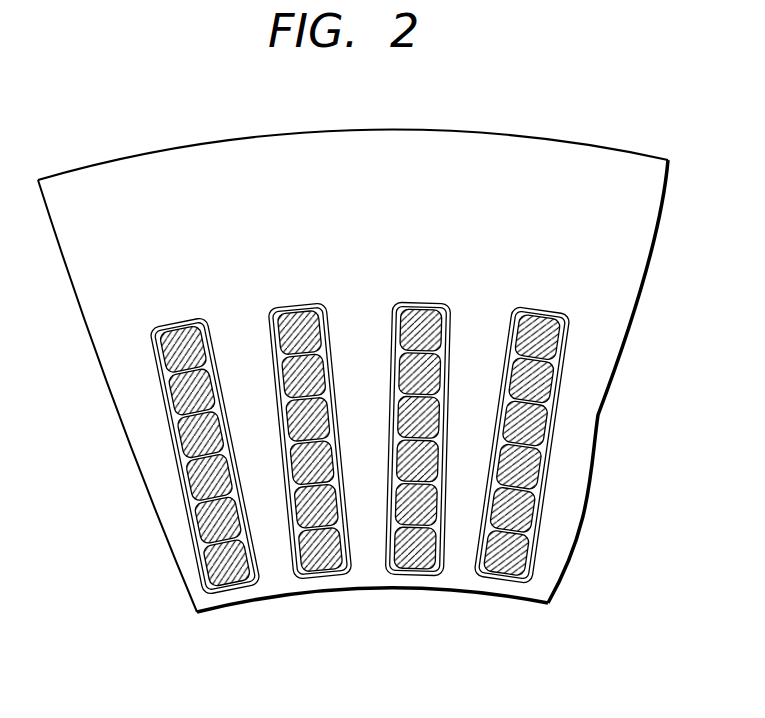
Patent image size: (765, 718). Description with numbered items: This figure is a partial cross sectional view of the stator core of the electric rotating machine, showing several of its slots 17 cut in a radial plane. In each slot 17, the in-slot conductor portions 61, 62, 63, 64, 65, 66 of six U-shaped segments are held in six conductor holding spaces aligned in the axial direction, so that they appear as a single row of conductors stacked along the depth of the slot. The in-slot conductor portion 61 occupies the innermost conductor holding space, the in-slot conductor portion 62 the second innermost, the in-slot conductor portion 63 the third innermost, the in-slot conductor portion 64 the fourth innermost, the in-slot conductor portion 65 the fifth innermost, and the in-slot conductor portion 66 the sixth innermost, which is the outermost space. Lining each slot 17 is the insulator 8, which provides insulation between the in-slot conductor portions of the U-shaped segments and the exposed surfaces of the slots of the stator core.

The insulator 8 is at (392, 530).
The slot 17 is at (172, 308).
The in-slot conductor portion 61 is at (230, 568).
The in-slot conductor portion 62 is at (220, 522).
The in-slot conductor portion 63 is at (210, 482).
The in-slot conductor portion 64 is at (200, 436).
The in-slot conductor portion 65 is at (192, 398).
The in-slot conductor portion 66 is at (180, 354).